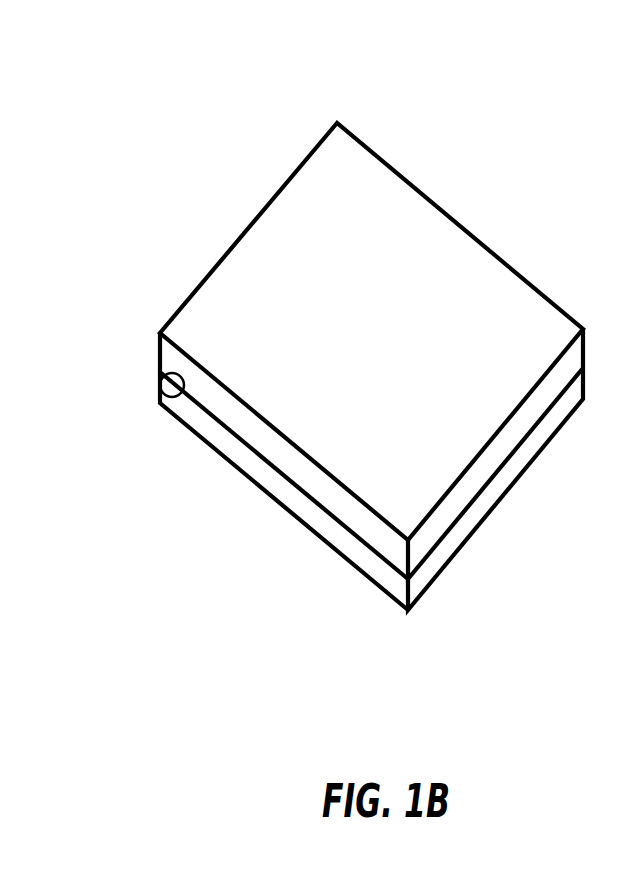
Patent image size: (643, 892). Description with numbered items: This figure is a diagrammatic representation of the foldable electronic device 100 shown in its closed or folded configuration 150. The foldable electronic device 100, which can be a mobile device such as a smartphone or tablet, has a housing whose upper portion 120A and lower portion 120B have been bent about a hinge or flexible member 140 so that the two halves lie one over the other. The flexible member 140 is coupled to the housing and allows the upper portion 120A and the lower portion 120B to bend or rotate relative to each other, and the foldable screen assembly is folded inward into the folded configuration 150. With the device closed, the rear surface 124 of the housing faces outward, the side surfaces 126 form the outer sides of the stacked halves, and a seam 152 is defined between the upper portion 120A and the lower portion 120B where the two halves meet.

The folded configuration 150 is at (233, 154).
The foldable electronic device 100 is at (379, 141).
The rear surface 124 is at (393, 265).
The upper portion 120A is at (522, 275).
The lower portion 120B is at (453, 557).
The flexible member 140 is at (175, 385).
The seam 152 is at (287, 483).
The side surfaces 126 is at (367, 560).